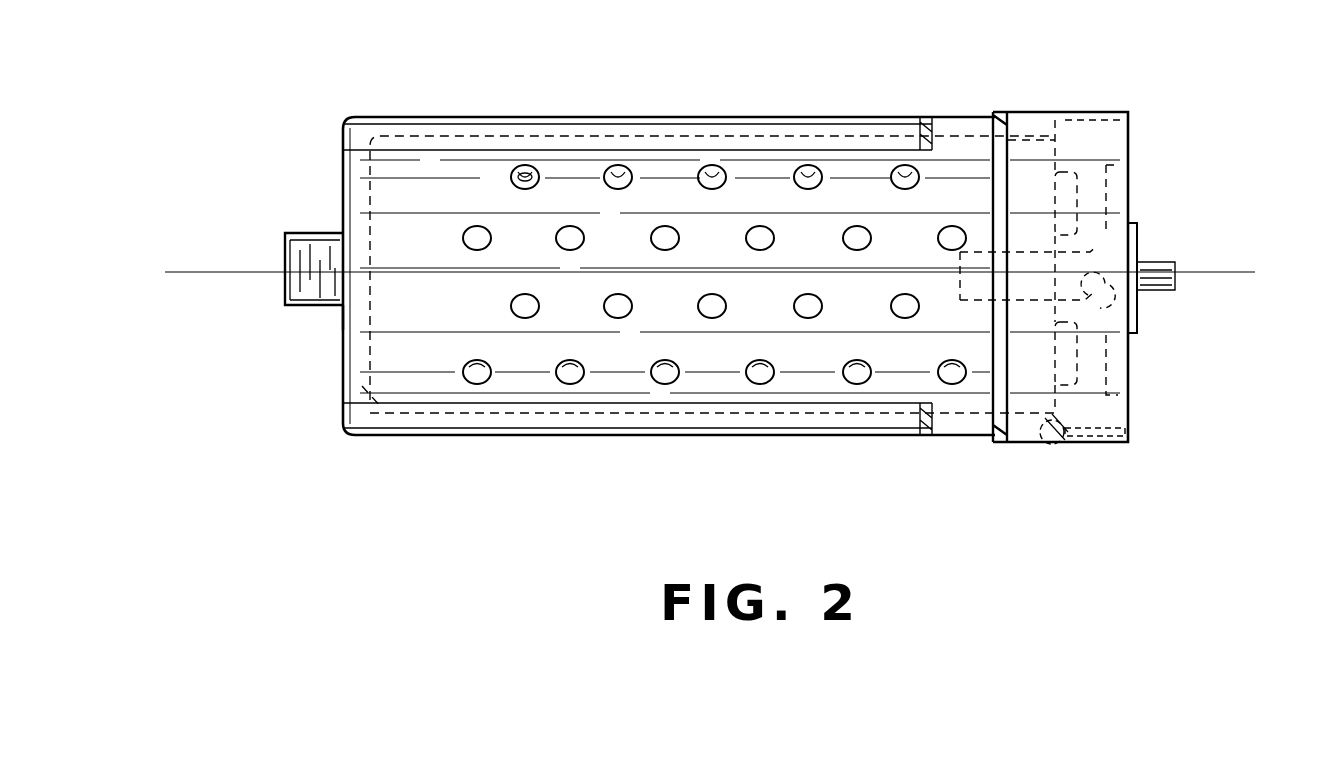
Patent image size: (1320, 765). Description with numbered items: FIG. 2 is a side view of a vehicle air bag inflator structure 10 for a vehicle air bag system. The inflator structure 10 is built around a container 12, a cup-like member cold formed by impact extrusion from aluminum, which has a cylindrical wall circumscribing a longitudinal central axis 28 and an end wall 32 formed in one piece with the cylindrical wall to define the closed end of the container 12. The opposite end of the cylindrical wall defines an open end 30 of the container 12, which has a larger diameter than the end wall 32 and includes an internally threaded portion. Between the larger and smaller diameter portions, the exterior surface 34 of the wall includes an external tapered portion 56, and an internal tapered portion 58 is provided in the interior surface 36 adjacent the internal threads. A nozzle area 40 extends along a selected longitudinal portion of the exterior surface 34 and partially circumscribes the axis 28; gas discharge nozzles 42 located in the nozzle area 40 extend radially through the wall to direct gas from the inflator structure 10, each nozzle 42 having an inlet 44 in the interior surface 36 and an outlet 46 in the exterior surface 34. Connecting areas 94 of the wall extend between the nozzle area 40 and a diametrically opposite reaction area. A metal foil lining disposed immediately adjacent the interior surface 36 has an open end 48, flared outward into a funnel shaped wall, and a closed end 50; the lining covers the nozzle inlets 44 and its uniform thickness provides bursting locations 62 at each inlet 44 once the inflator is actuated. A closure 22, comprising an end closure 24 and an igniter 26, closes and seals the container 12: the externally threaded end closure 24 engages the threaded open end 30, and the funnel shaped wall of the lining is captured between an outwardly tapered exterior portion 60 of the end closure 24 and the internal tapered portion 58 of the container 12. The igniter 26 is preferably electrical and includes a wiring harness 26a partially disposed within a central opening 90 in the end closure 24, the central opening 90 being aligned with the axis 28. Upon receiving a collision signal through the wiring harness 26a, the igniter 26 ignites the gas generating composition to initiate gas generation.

The vehicle air bag inflator structure 10 is at (902, 52).
The container 12 is at (792, 110).
The closure 22 is at (1140, 134).
The end closure 24 is at (1088, 166).
The igniter 26 is at (1050, 268).
The wiring harness 26a is at (1162, 268).
The longitudinal central axis 28 is at (244, 272).
The open end 30 is at (1138, 406).
The end wall 32 is at (343, 352).
The exterior surface 34 is at (742, 438).
The interior surface 36 is at (660, 408).
The nozzle area 40 is at (500, 292).
The gas discharge nozzles 42 is at (479, 378).
The inlet 44 is at (526, 168).
The outlet 46 is at (522, 170).
The open end 48 is at (1055, 444).
The closed end 50 is at (362, 410).
The external tapered portion 56 is at (997, 444).
The internal tapered portion 58 is at (1062, 132).
The outwardly tapered exterior portion 60 is at (1044, 440).
The bursting locations 62 is at (665, 232).
The central opening 90 is at (1140, 311).
The connecting areas 94 is at (462, 108).